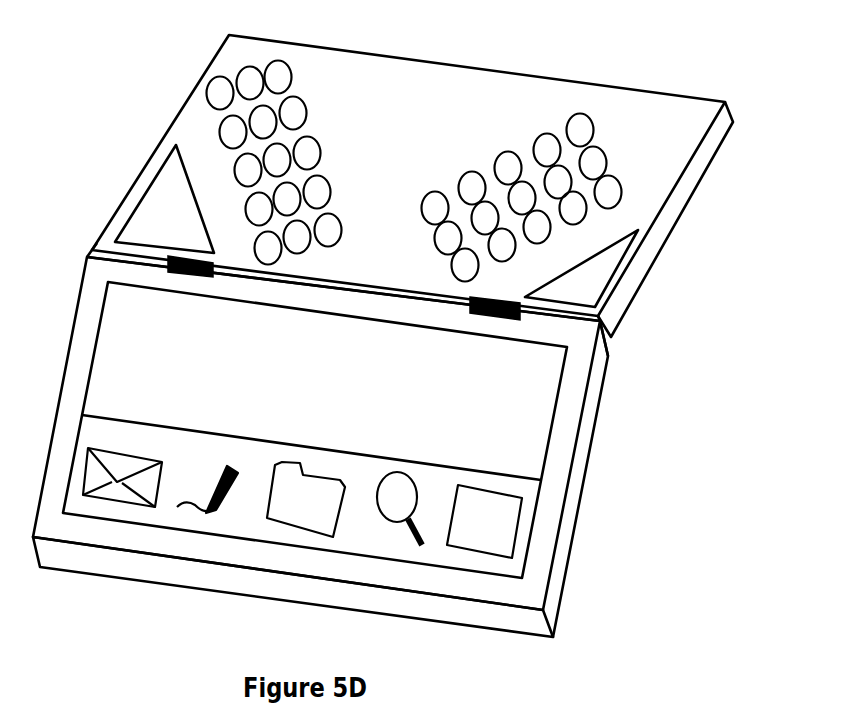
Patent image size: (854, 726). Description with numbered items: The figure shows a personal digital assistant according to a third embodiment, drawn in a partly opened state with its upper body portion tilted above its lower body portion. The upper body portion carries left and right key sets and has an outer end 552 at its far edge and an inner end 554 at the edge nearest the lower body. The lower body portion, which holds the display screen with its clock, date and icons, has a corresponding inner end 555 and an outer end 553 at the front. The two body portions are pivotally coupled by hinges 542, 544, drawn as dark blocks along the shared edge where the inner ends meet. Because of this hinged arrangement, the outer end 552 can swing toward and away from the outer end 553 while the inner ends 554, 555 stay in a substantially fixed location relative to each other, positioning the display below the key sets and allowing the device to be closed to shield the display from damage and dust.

The outer end 552 is at (465, 70).
The outer end 553 is at (182, 572).
The inner end 554 is at (105, 233).
The inner end 555 is at (586, 340).
The hinge 542 is at (177, 277).
The hinge 544 is at (472, 303).